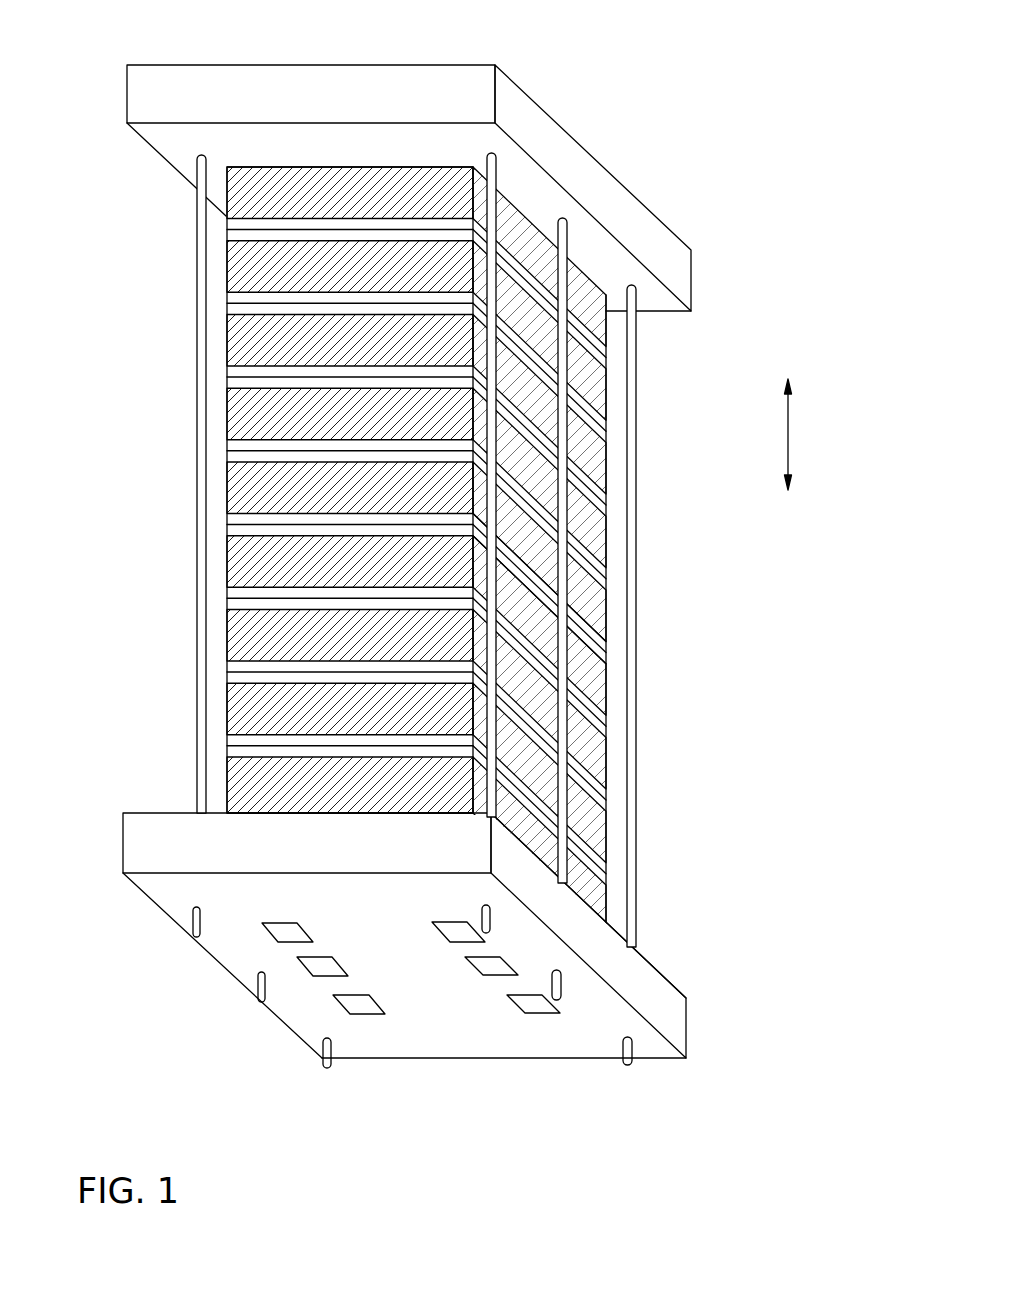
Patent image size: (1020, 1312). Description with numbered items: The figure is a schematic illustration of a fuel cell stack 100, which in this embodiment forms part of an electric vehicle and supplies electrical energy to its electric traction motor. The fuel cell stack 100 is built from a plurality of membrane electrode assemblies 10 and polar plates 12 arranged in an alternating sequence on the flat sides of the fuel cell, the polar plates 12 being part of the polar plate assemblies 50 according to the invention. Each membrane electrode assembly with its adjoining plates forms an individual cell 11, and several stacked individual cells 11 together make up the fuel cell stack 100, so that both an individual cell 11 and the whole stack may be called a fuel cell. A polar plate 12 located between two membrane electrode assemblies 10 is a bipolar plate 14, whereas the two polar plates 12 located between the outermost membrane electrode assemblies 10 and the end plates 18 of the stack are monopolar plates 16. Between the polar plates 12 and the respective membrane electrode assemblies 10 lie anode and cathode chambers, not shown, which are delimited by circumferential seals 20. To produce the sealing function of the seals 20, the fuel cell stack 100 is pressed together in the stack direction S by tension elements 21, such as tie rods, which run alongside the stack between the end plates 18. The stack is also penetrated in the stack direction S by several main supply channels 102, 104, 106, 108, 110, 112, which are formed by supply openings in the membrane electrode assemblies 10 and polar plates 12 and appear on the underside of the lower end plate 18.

The fuel cell stack 100 is at (552, 89).
The membrane electrode assembly 10 is at (600, 569).
The individual cell 11 is at (224, 450).
The polar plate 12 is at (494, 556).
The bipolar plate 14 is at (494, 556).
The monopolar plate 16 is at (494, 556).
The end plate 18 is at (616, 202).
The circumferential seal 20 is at (596, 558).
The tension element 21 is at (631, 720).
The polar plate assembly 50 is at (600, 322).
The main supply channel 102 is at (343, 1009).
The main supply channel 104 is at (455, 936).
The main supply channel 106 is at (270, 932).
The main supply channel 108 is at (530, 1006).
The main supply channel 110 is at (306, 971).
The main supply channel 112 is at (490, 970).
The stack direction S is at (786, 433).